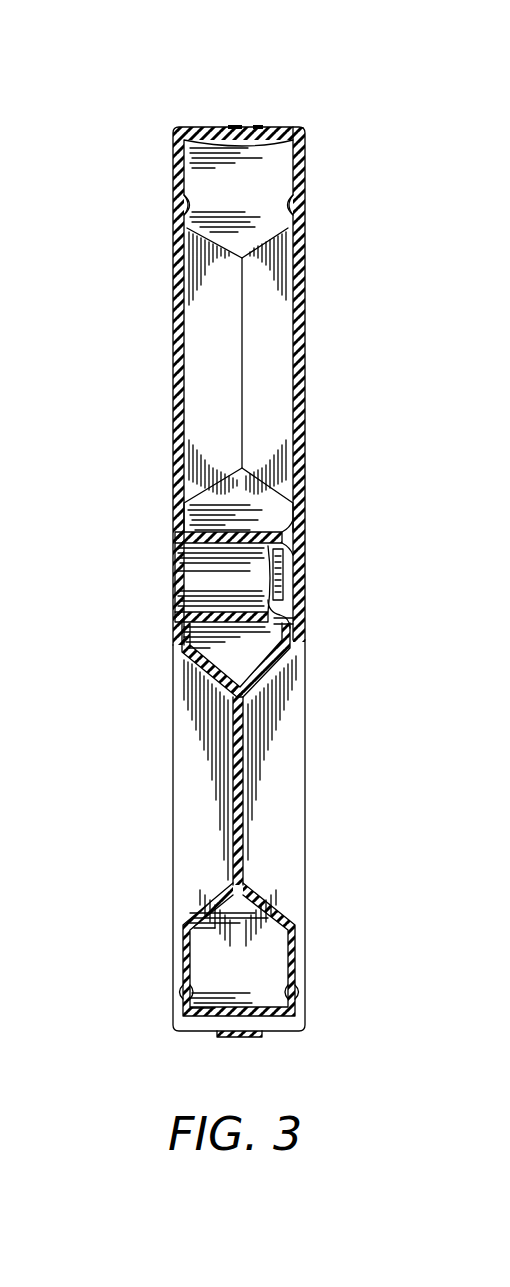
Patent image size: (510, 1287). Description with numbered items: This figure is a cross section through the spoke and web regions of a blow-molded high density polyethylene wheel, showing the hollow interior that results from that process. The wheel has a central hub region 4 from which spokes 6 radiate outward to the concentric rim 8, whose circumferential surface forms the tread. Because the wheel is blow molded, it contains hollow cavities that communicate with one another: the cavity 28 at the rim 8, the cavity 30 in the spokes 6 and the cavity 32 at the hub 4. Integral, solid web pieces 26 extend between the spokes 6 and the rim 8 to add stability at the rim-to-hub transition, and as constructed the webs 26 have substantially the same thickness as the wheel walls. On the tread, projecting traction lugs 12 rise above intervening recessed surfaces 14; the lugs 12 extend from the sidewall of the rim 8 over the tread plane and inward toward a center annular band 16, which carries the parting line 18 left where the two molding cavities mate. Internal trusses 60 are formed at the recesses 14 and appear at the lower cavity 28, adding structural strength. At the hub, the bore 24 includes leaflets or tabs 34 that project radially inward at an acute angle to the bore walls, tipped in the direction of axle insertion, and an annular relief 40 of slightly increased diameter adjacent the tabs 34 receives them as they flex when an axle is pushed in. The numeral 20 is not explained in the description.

The central hub region 4 is at (168, 645).
The spokes 6 is at (166, 373).
The rim 8 is at (165, 173).
The traction lugs 12 is at (308, 141).
The recessed surfaces 14 is at (175, 1012).
The center annular band 16 is at (248, 124).
The parting line 18 is at (233, 126).
The detent 20 is at (182, 213).
The bore 24 is at (205, 612).
The web pieces 26 is at (244, 787).
The rim cavity 28 is at (258, 180).
The spoke cavity 30 is at (263, 375).
The hub cavity 32 is at (248, 495).
The tabs 34 is at (280, 602).
The annular relief 40 is at (297, 612).
The internal trusses 60 is at (183, 988).